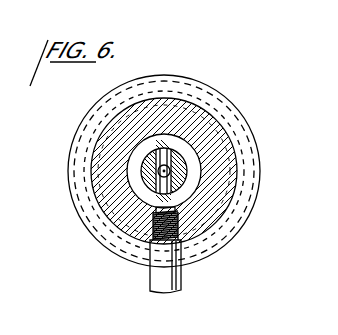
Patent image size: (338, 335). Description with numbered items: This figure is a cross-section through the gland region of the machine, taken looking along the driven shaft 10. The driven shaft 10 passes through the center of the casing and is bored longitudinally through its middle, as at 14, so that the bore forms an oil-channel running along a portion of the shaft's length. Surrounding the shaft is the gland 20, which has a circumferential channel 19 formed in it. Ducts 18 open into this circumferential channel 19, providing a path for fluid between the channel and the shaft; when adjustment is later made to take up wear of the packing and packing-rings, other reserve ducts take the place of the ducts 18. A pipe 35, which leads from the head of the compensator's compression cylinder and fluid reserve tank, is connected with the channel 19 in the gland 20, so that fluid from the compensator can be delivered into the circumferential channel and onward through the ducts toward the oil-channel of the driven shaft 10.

The driven shaft 10 is at (166, 171).
The longitudinal bore 14 is at (200, 177).
The ducts 18 is at (153, 191).
The circumferential channel 19 is at (212, 128).
The gland 20 is at (195, 113).
The pipe 35 is at (151, 278).